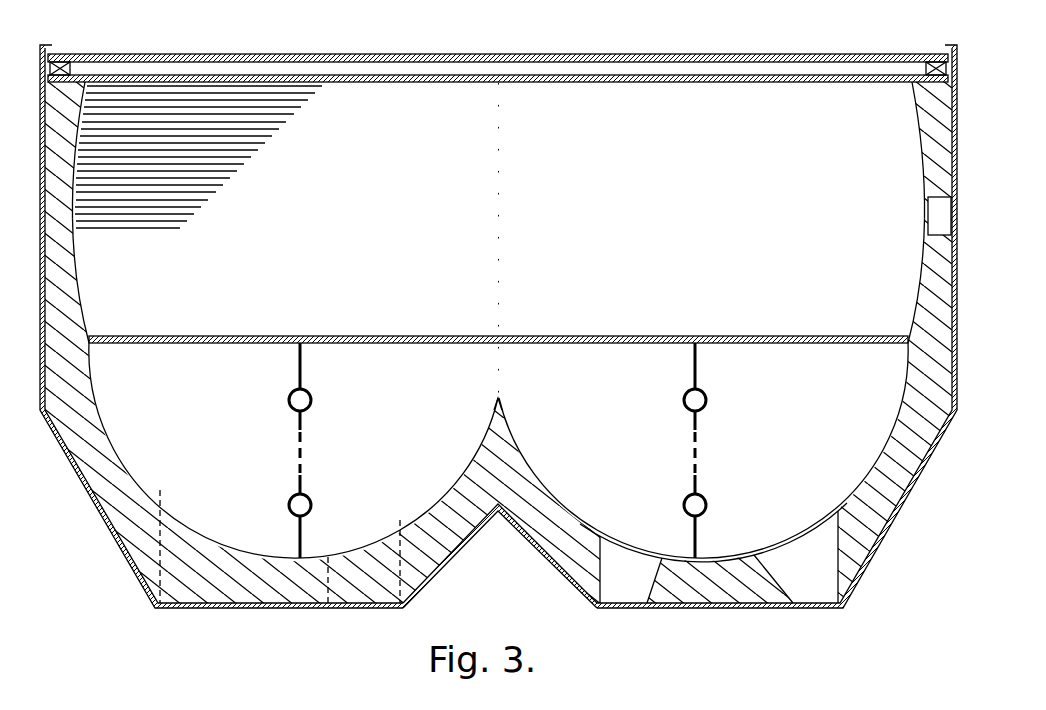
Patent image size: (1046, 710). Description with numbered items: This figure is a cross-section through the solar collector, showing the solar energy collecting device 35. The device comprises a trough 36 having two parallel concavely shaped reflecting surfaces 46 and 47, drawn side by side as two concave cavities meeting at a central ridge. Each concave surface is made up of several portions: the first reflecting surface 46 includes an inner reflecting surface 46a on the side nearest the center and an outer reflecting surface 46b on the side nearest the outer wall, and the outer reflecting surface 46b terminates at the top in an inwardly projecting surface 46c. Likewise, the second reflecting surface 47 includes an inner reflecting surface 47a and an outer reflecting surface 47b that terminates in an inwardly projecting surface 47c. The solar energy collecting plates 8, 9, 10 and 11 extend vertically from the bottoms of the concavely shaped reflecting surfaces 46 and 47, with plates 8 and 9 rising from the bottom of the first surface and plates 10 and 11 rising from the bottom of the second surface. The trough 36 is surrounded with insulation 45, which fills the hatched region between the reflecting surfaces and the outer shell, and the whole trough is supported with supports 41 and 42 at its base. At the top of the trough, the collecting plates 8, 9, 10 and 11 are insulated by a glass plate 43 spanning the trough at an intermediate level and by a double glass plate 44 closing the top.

The solar energy collecting plate 8 is at (289, 400).
The solar energy collecting plate 9 is at (289, 505).
The solar energy collecting plate 10 is at (684, 400).
The solar energy collecting plate 11 is at (684, 505).
The solar energy collecting device 35 is at (428, 55).
The trough 36 is at (500, 403).
The support 41 is at (935, 207).
The support 42 is at (331, 608).
The glass plate 43 is at (816, 337).
The double glass plate 44 is at (822, 80).
The insulation 45 is at (493, 503).
The concavely shaped reflecting surface 46 is at (373, 449).
The inner reflecting surface 46a is at (472, 478).
The outer reflecting surface 46b is at (76, 284).
The inwardly projecting surface 46c is at (82, 110).
The concavely shaped reflecting surface 47 is at (622, 446).
The inner reflecting surface 47a is at (541, 484).
The outer reflecting surface 47b is at (915, 318).
The inwardly projecting surface 47c is at (910, 98).